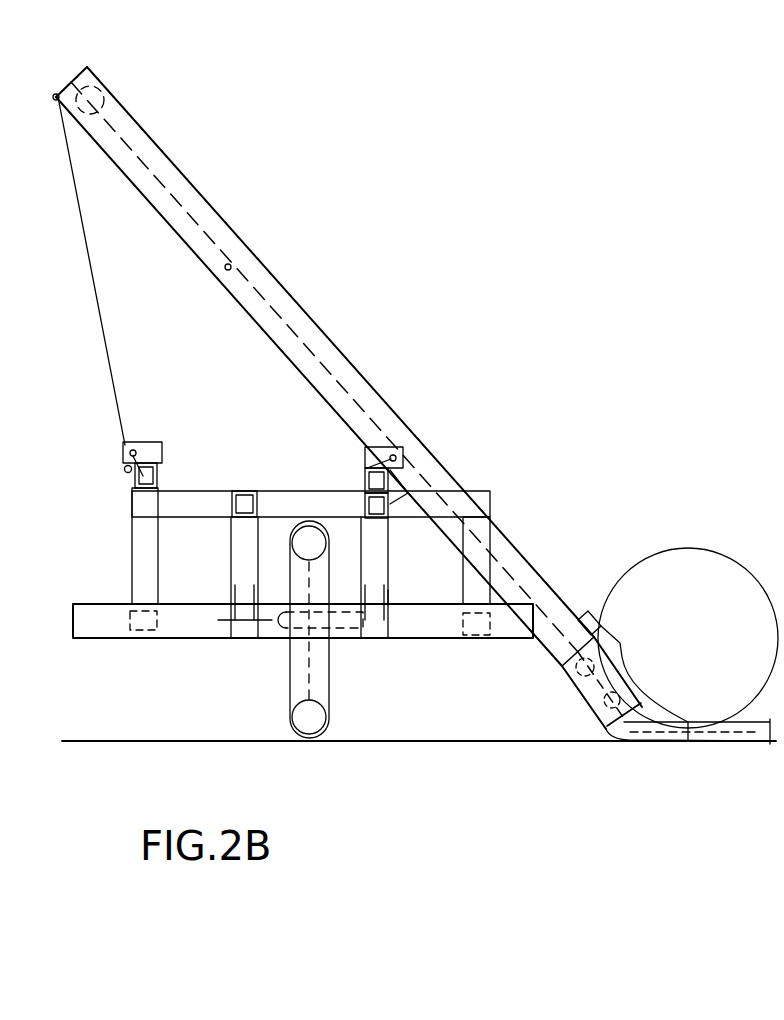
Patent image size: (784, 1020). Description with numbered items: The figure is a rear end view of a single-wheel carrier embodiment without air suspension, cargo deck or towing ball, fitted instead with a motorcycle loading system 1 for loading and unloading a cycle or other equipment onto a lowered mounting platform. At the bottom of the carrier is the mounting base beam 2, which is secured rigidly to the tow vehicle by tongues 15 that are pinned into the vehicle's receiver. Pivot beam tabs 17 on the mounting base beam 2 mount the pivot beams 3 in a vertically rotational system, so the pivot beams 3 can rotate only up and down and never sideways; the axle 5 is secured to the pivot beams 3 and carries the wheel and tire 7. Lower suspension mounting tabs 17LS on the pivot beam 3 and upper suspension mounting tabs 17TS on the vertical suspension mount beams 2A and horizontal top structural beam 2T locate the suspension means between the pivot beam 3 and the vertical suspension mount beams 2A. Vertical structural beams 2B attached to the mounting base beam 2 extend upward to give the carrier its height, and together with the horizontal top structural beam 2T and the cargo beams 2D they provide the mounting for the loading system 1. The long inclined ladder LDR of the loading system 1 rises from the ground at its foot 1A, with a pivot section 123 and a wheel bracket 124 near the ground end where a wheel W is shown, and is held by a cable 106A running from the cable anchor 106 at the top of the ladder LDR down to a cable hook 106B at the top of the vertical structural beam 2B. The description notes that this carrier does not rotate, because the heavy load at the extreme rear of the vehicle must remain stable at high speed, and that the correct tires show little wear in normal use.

The motorcycle loading system 1 is at (503, 384).
The ladder foot plate 1A is at (602, 742).
The mounting base beam 2 is at (72, 618).
The vertical suspension mount beam 2A is at (232, 571).
The vertical structural beam 2B is at (132, 547).
The cargo beam 2D is at (125, 445).
The horizontal top structural beam 2T is at (285, 508).
The pivot beam 3 is at (242, 628).
The axle 5 is at (355, 627).
The wheel and tire 7 is at (318, 565).
The tongue 15 is at (142, 633).
The pivot beam tab 17 is at (222, 638).
The upper suspension mounting tab 17TS is at (226, 490).
The lower suspension mounting tab 17LS is at (388, 593).
The cable anchor 106 is at (95, 98).
The cable 106A is at (96, 292).
The cable hook 106B is at (125, 471).
The foot pivot section 123 is at (585, 675).
The wheel bracket 124 is at (588, 611).
The ladder LDR is at (305, 332).
The wheel W is at (688, 638).